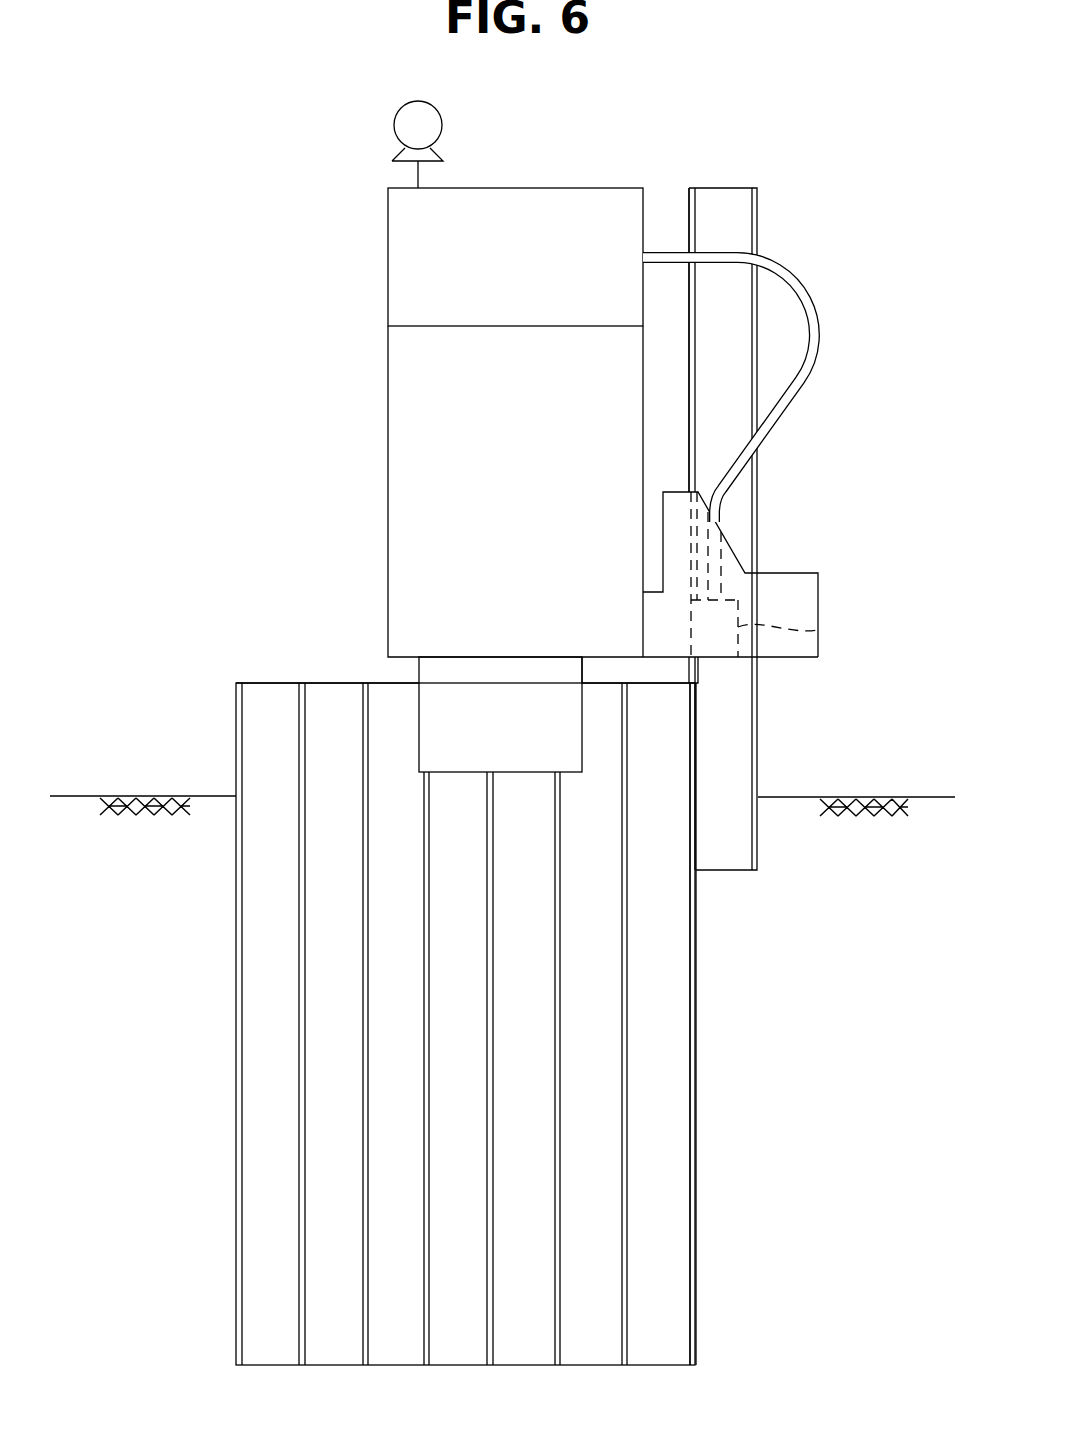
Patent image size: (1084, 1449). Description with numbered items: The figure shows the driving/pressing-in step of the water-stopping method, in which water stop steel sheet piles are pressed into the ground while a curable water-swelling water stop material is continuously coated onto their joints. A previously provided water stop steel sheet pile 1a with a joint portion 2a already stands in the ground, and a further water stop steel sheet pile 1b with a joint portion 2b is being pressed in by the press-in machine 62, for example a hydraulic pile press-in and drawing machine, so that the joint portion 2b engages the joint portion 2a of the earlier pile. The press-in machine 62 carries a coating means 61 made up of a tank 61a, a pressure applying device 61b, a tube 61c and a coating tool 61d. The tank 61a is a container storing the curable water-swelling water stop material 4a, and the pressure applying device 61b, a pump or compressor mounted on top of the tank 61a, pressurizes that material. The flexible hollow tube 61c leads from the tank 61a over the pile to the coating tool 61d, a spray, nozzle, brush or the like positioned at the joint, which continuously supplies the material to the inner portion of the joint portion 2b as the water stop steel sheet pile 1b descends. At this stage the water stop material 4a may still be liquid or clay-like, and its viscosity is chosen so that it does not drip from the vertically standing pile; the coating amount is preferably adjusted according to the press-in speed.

The coating means 61 is at (606, 355).
The tank 61a is at (388, 258).
The pressure applying device 61b is at (442, 122).
The tube 61c is at (822, 345).
The coating tool 61d is at (818, 631).
The press-in machine 62 is at (388, 487).
The water stop steel sheet pile 1a is at (660, 1150).
The water stop steel sheet pile 1b is at (725, 188).
The joint portion 2a is at (688, 1052).
The joint portion 2b is at (695, 296).
The curable water-swelling water stop material 4a is at (700, 670).